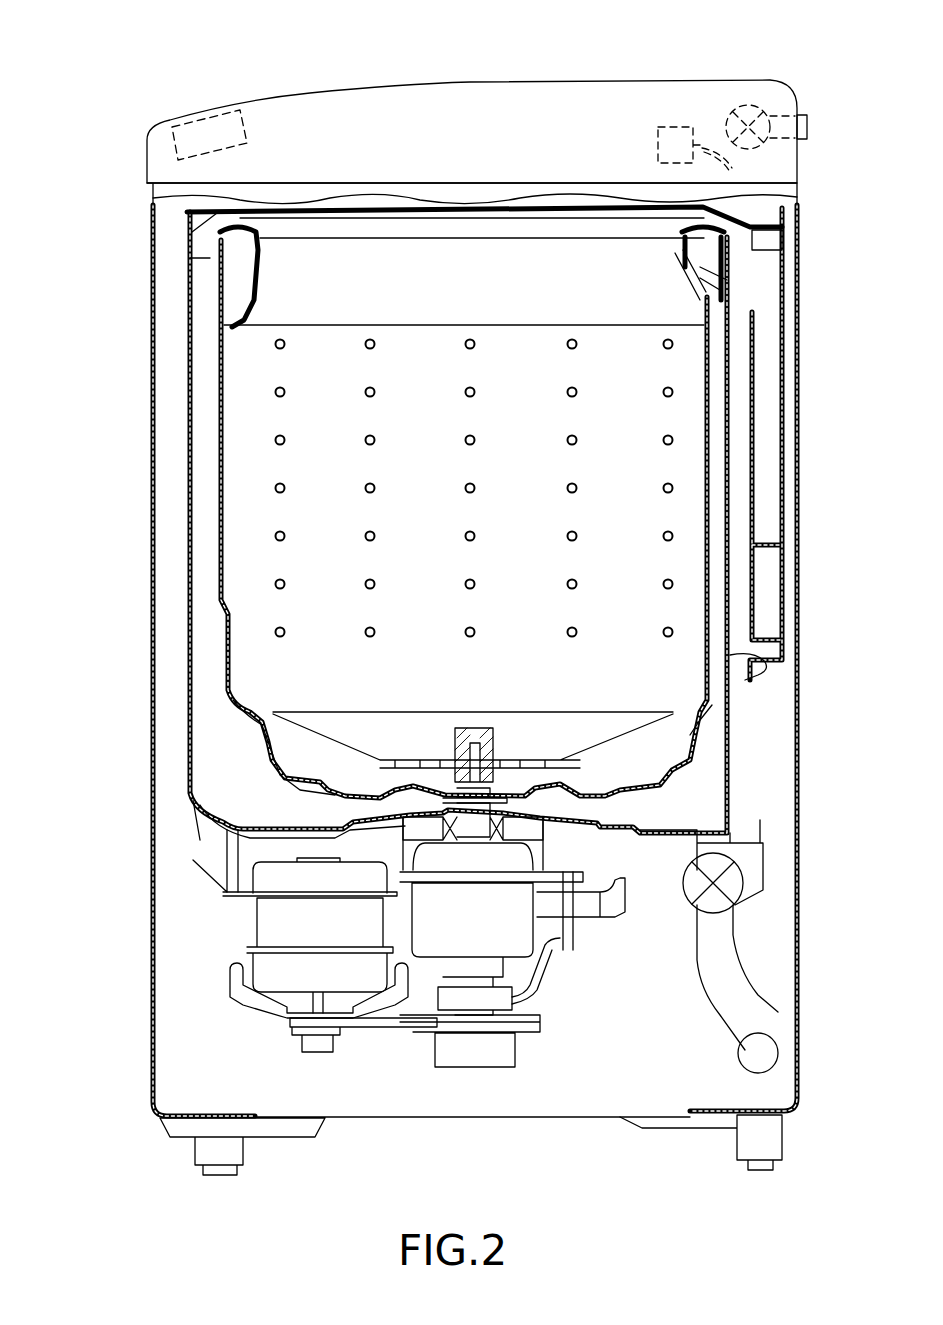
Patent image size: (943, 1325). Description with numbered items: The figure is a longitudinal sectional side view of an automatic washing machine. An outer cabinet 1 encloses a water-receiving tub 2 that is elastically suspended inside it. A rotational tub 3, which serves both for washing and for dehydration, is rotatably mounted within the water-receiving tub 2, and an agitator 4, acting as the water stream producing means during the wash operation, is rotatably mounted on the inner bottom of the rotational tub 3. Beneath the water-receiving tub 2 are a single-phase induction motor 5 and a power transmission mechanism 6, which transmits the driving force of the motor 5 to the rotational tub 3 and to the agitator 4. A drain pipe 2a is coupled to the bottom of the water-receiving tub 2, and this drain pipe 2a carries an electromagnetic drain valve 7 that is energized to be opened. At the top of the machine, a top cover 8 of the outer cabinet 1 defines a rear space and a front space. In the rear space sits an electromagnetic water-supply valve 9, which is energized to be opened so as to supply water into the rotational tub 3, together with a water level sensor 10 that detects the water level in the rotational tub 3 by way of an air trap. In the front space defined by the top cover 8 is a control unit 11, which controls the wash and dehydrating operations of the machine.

The outer cabinet 1 is at (153, 570).
The water-receiving tub 2 is at (190, 482).
The drain pipe 2a is at (697, 950).
The rotational tub 3 is at (225, 630).
The agitator 4 is at (365, 760).
The single-phase induction motor 5 is at (255, 920).
The power transmission mechanism 6 is at (385, 1032).
The electromagnetic drain valve 7 is at (690, 900).
The top cover 8 is at (575, 88).
The electromagnetic water-supply valve 9 is at (750, 105).
The water level sensor 10 is at (683, 125).
The control unit 11 is at (245, 125).